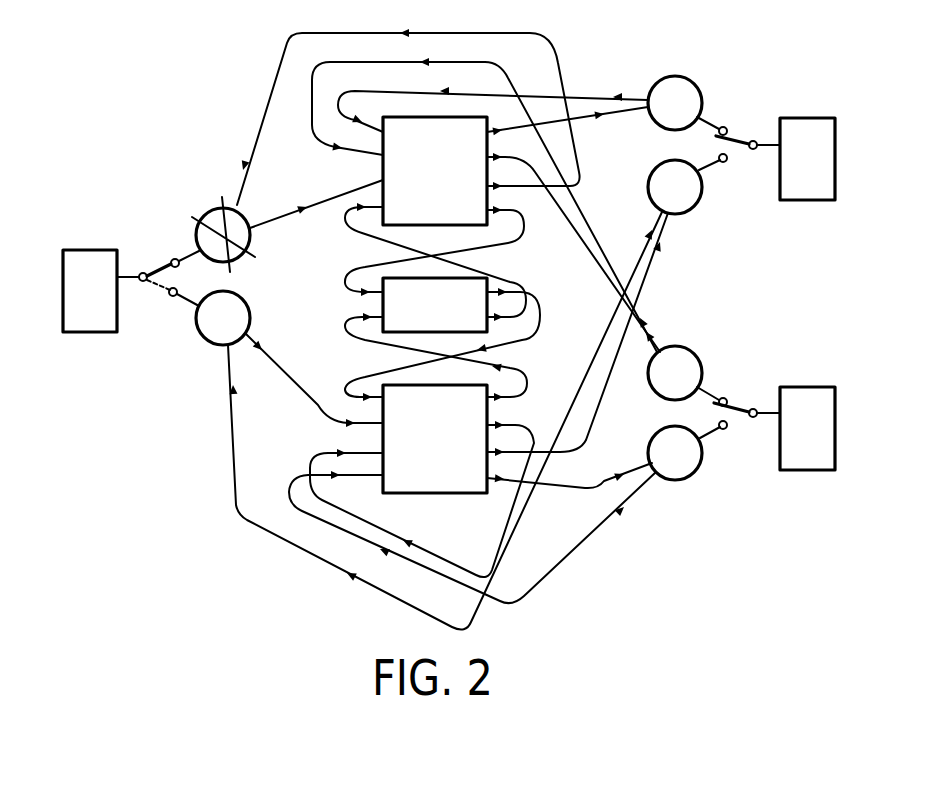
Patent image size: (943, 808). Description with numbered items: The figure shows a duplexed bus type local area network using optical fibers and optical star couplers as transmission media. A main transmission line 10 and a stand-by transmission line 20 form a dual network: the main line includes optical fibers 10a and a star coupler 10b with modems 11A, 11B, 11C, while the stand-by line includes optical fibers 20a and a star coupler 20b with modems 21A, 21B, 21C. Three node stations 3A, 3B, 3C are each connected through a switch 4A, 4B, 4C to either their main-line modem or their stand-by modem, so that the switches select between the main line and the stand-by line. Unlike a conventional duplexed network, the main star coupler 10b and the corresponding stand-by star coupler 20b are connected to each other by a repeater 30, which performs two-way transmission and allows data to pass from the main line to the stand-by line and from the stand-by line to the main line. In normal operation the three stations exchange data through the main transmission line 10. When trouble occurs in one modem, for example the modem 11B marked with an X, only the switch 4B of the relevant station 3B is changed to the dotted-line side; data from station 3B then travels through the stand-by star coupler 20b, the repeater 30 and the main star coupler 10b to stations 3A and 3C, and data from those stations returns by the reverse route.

The main transmission line 10 is at (612, 102).
The optical fibers 10a is at (590, 118).
The star coupler 10b is at (383, 172).
The modem 11A is at (703, 63).
The modem 11B is at (218, 207).
The modem 11C is at (727, 340).
The stand-by transmission line 20 is at (633, 248).
The optical fibers 20a is at (580, 386).
The star coupler 20b is at (437, 493).
The modem 21A is at (700, 206).
The modem 21B is at (216, 346).
The modem 21C is at (688, 482).
The repeater 30 is at (383, 303).
The node station 3A is at (818, 118).
The node station 3B is at (103, 250).
The node station 3C is at (823, 387).
The switch 4A is at (742, 132).
The switch 4B is at (158, 267).
The switch 4C is at (755, 390).